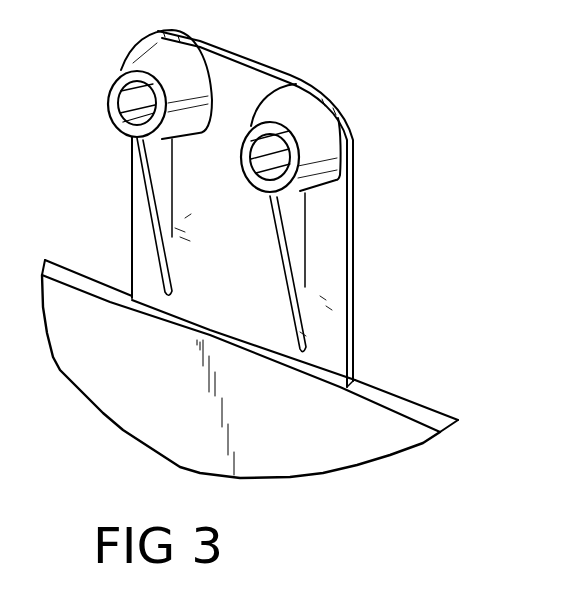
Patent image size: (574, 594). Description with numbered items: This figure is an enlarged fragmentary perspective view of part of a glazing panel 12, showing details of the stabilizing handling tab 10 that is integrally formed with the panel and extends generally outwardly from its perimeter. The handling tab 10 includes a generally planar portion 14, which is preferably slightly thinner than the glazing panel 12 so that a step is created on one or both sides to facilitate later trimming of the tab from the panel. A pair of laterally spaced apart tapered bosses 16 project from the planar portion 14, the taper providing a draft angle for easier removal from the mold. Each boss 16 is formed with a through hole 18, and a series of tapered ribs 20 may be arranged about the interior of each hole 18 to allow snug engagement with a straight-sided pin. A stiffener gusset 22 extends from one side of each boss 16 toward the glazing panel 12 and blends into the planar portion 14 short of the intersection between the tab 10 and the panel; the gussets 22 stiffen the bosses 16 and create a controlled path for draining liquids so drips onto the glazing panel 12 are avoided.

The stabilizing handling tab 10 is at (368, 178).
The glazing panel 12 is at (415, 408).
The planar portion 14 is at (340, 268).
The tapered bosses 16 is at (169, 54).
The through hole 18 is at (121, 113).
The tapered ribs 20 is at (115, 86).
The stiffener gusset 22 is at (150, 222).